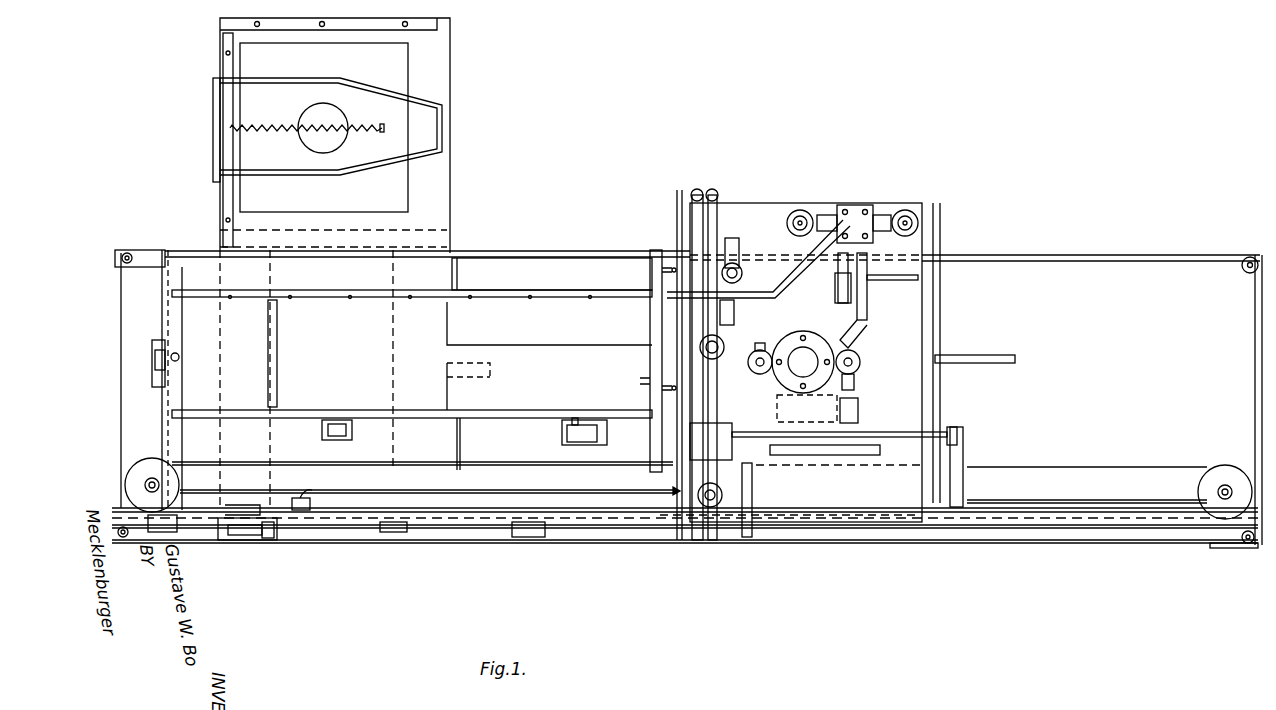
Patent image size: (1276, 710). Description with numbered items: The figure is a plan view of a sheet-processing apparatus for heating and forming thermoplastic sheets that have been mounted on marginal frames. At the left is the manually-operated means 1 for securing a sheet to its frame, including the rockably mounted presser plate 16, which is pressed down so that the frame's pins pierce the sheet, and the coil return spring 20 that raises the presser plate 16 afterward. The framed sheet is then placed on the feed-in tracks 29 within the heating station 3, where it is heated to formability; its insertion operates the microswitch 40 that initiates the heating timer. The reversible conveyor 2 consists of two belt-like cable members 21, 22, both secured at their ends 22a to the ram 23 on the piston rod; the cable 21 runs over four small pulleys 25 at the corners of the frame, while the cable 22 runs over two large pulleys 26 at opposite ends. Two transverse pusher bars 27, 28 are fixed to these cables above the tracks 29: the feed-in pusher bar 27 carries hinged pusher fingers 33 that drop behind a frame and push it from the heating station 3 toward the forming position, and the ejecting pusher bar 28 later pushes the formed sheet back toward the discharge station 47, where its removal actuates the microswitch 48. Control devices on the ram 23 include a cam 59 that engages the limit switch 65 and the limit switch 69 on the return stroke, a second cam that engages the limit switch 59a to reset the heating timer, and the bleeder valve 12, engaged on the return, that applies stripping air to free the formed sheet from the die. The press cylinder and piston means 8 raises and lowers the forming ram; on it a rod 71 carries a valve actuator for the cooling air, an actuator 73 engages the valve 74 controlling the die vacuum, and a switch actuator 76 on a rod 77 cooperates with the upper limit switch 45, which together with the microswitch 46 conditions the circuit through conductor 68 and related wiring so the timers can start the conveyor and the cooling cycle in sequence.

The manually-operated means 1 is at (437, 167).
The reversible conveyor 2 is at (547, 255).
The heating station 3 is at (692, 183).
The cylinder and piston means 8 is at (803, 331).
The bleeder valve 12 is at (296, 503).
The presser plate 16 is at (397, 78).
The coil return spring 20 is at (270, 125).
The belt-like member 21 is at (122, 411).
The belt-like member 22 is at (485, 460).
The ends 22a is at (243, 512).
The ram 23 is at (250, 540).
The small pulleys 25 is at (130, 263).
The large pulleys 26 is at (175, 487).
The pusher bar 27 is at (652, 382).
The pusher bar 28 is at (935, 343).
The feed-in tracks 29 is at (552, 297).
The pusher fingers 33 is at (672, 267).
The microswitch 40 is at (335, 413).
The limit switch 45 is at (858, 400).
The microswitch 46 is at (179, 357).
The discharge station 47 is at (515, 313).
The microswitch 48 is at (574, 420).
The cam 59 is at (232, 540).
The limit switch 59a is at (532, 537).
The limit switch 65 is at (180, 530).
The conductor 68 is at (270, 540).
The limit switch 69 is at (395, 532).
The rod 71 is at (760, 347).
The actuator 73 is at (757, 373).
The valve 74 is at (790, 393).
The switch actuator 76 is at (855, 372).
The rod 77 is at (860, 360).